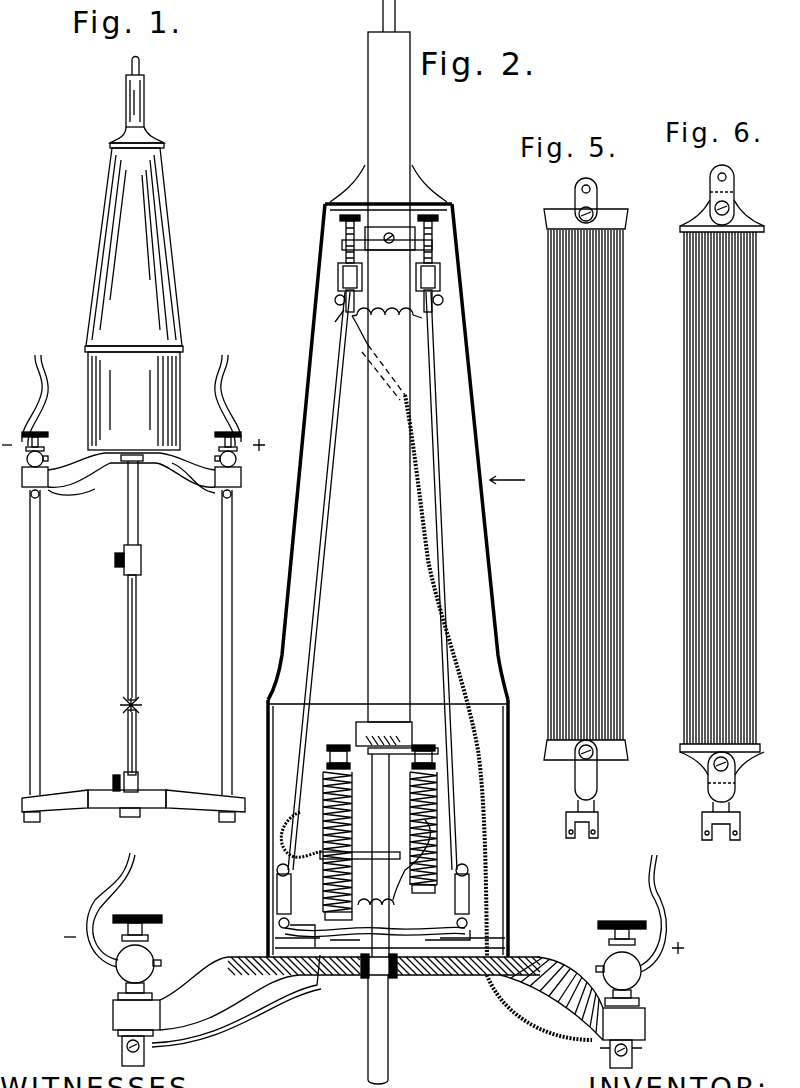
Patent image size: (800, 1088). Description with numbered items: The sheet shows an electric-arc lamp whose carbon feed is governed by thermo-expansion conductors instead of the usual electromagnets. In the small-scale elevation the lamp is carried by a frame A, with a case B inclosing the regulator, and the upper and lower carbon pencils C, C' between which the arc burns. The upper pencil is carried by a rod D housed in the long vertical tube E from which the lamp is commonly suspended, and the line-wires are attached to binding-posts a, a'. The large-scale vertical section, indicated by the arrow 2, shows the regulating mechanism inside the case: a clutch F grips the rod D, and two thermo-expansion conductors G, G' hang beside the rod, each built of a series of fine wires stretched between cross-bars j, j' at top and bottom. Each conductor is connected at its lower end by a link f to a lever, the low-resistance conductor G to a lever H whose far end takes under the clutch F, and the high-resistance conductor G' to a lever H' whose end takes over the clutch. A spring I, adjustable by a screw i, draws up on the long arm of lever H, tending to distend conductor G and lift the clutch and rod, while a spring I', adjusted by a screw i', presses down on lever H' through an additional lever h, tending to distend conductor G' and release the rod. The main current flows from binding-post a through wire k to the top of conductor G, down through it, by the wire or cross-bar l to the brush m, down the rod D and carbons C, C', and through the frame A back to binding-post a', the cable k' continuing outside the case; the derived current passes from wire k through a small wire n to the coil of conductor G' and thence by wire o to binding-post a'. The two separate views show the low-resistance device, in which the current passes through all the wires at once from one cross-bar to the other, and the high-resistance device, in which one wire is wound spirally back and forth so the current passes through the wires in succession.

In FIG. 1, the long vertical tube E is at (132, 103).
In FIG. 2, the long vertical tube E is at (397, 478).
In FIG. 1, the case B is at (134, 299).
In FIG. 2, the case B is at (388, 561).
In FIG. 1, the frame A is at (133, 660).
In FIG. 2, the frame A is at (150, 1052).
In FIG. 1, the binding-post a is at (232, 411).
In FIG. 2, the binding-post a is at (640, 930).
In FIG. 1, the binding-post a' is at (32, 411).
In FIG. 2, the binding-post a' is at (113, 926).
In FIG. 1, the wire o is at (71, 488).
In FIG. 2, the wire o is at (296, 933).
In FIG. 1, the wire k is at (193, 480).
In FIG. 2, the wire k is at (435, 636).
In FIG. 2, the conductor cable lower end k' is at (539, 1007).
In FIG. 1, the rod D is at (134, 515).
In FIG. 2, the rod D is at (390, 1016).
In FIG. 1, the upper carbon pencil C is at (136, 644).
In FIG. 1, the lower carbon pencil C' is at (132, 751).
In FIG. 2, the thermo-expansion conductor G is at (319, 581).
In FIG. 2, the thermo-expansion conductor G' is at (436, 581).
In FIG. 2, the spring I is at (329, 846).
In FIG. 2, the spring I' is at (415, 832).
In FIG. 2, the screw i is at (331, 757).
In FIG. 2, the screw i' is at (416, 757).
In FIG. 2, the cross-bar j is at (387, 275).
In FIG. 5, the cross-bar j is at (576, 469).
In FIG. 6, the cross-bar j is at (713, 460).
In FIG. 2, the clamp connection j' is at (334, 321).
In FIG. 2, the link f is at (373, 896).
In FIG. 5, the link f is at (574, 789).
In FIG. 6, the link f is at (722, 796).
In FIG. 2, the small wire n is at (387, 306).
In FIG. 2, the lever H is at (332, 923).
In FIG. 2, the lever H' is at (422, 930).
In FIG. 2, the wire l is at (301, 839).
In FIG. 2, the brush m is at (360, 863).
In FIG. 2, the additional lever h is at (383, 904).
In FIG. 2, the clutch F is at (384, 951).
In FIG. 2, the section arrow 2 is at (507, 474).